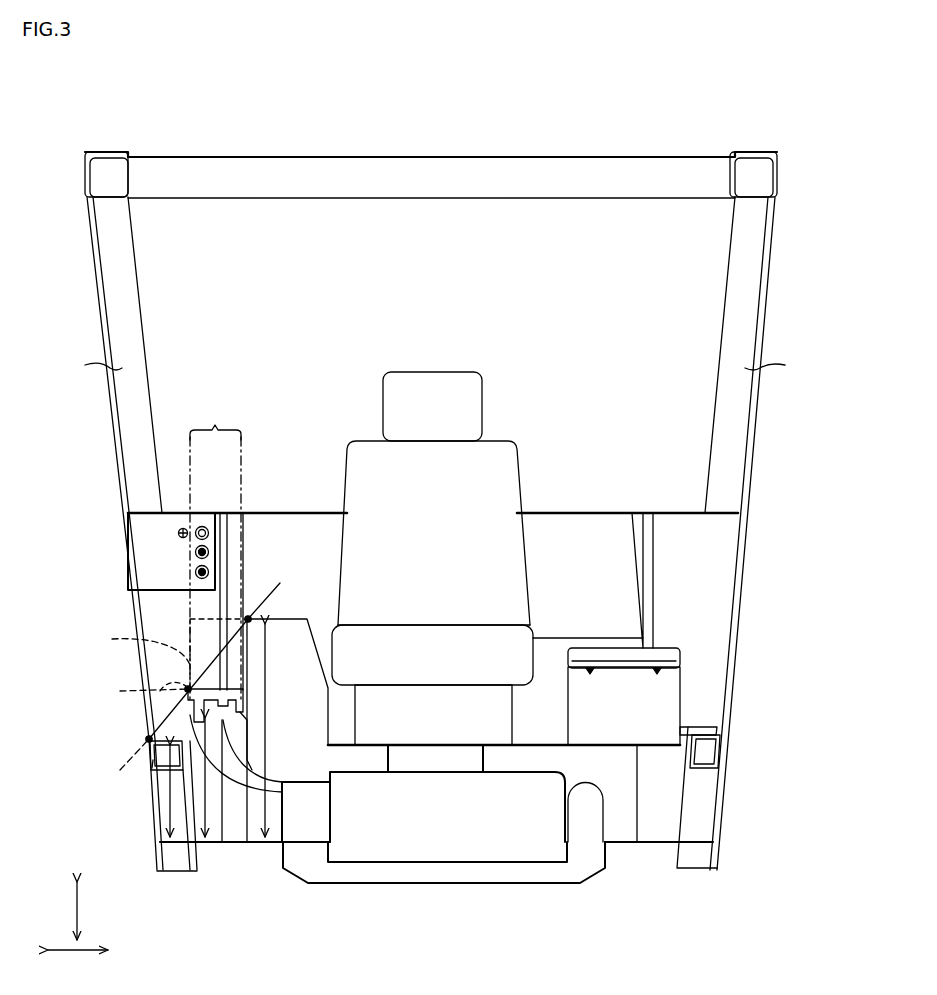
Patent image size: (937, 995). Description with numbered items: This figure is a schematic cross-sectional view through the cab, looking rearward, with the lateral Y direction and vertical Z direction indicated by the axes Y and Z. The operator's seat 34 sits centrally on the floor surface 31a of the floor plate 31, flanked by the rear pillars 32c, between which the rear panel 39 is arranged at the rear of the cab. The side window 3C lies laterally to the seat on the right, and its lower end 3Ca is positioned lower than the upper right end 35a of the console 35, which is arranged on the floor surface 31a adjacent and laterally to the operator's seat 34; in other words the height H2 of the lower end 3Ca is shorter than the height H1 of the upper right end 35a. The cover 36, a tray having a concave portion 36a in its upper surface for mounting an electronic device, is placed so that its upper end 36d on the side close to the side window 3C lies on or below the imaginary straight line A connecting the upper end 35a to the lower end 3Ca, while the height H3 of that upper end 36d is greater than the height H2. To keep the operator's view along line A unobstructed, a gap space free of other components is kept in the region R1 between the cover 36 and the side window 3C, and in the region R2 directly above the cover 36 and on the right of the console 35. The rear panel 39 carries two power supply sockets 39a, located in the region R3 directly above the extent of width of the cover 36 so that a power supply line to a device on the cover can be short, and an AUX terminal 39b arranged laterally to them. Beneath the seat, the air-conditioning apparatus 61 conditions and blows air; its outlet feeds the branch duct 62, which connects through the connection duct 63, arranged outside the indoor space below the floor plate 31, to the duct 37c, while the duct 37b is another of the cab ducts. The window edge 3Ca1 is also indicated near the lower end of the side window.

The side window 3C is at (118, 491).
The rear pillar 32c is at (431, 365).
The rear panel 39 is at (173, 523).
The AUX terminal 39b is at (180, 533).
The power supply socket 39a is at (196, 538).
The cover 36 is at (258, 810).
The concave portion 36a is at (226, 735).
The upper end of cover 36d is at (188, 689).
The duct 37b is at (228, 792).
The lower end of side window 3Ca is at (146, 739).
The pillar window 3Ca1 is at (153, 770).
The console 35 is at (298, 619).
The upper right end of console 35a is at (248, 617).
The operator's seat 34 is at (443, 468).
The air-conditioning apparatus 61 is at (395, 808).
The branch duct 62 is at (305, 820).
The connection duct 63 is at (497, 875).
The duct 37c is at (592, 815).
The floor surface 31a is at (672, 838).
The floor plate 31 is at (660, 843).
The region R1 is at (136, 689).
The region R2 is at (166, 654).
The region R3 is at (215, 552).
The height of upper right end of console H1 is at (281, 730).
The height of lower end of side window H2 is at (178, 844).
The height of upper end of cover H3 is at (197, 844).
The imaginary straight line A is at (198, 674).
The Z direction Z is at (76, 896).
The Y direction Y is at (88, 950).